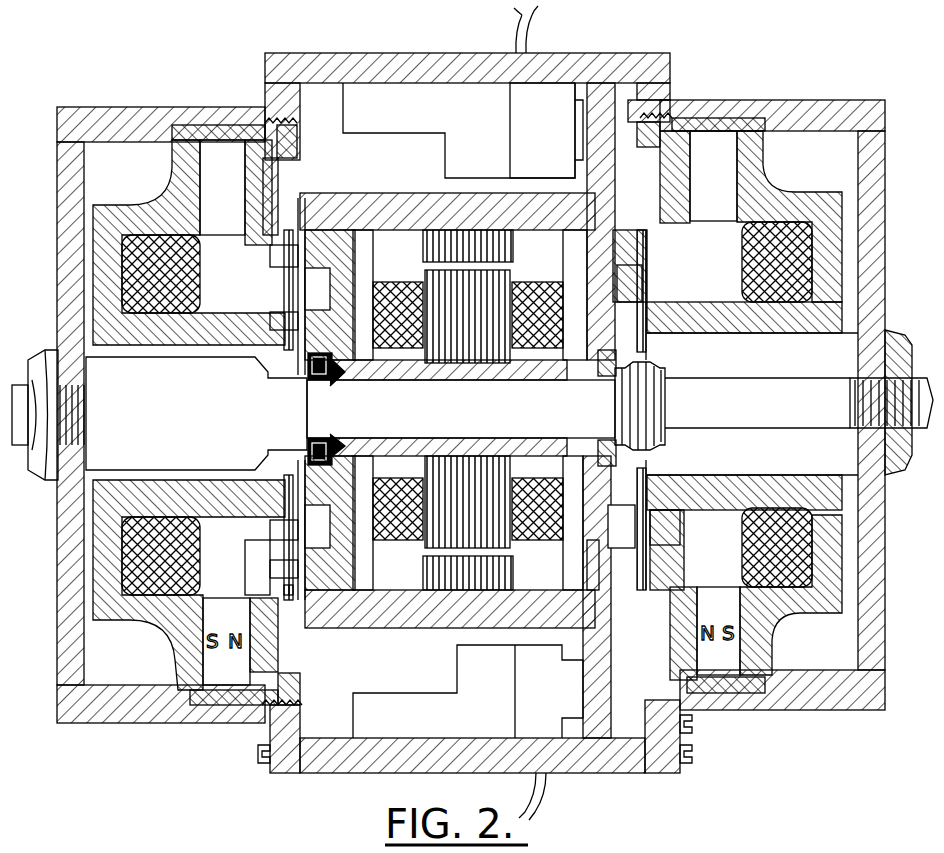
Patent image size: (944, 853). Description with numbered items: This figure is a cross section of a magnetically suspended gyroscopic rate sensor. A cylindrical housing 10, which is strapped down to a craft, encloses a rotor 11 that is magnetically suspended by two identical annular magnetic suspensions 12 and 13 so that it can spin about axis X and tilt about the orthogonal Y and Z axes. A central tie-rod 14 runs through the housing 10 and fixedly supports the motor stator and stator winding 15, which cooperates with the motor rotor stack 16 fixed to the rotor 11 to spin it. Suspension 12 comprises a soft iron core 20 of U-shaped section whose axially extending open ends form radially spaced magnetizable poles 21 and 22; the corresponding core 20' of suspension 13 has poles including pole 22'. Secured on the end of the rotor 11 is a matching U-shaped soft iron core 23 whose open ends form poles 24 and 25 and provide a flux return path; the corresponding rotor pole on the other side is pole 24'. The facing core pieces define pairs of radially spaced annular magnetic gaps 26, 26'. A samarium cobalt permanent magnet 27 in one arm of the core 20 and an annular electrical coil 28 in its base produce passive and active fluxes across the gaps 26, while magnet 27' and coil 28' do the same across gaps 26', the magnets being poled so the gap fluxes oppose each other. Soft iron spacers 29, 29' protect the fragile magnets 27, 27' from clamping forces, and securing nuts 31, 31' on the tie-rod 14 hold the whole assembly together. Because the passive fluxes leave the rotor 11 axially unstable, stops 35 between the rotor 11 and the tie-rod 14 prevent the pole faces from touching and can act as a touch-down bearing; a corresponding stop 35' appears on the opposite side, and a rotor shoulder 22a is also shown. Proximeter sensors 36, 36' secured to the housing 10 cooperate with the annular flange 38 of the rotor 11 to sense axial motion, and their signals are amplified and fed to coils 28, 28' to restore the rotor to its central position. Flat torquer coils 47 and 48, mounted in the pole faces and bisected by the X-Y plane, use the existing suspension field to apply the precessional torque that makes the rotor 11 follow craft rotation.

The cylindrical housing 10 is at (85, 107).
The rotor 11 is at (400, 628).
The magnetic suspension 12 is at (282, 288).
The magnetic suspension 13 is at (650, 285).
The tie-rod 14 is at (470, 412).
The stator and stator winding 15 is at (495, 362).
The motor rotor stack 16 is at (447, 193).
The soft iron core 20 is at (136, 432).
The soft iron core 20' is at (772, 405).
The magnetizable pole 21 is at (292, 232).
The magnetizable pole 22 is at (196, 407).
The magnetizable pole 22' is at (735, 410).
The shaft shoulder 22a is at (583, 535).
The soft iron core 23 is at (318, 283).
The magnetizable pole 24 is at (282, 368).
The magnetizable pole 24' is at (673, 526).
The magnetizable pole 25 is at (332, 378).
The annular magnetic gap 26 is at (299, 620).
The annular magnetic gap 26' is at (672, 410).
The permanent magnet 27 is at (189, 242).
The permanent magnet 27' is at (751, 179).
The electrical coil 28 is at (106, 415).
The electrical coil 28' is at (837, 398).
The soft iron spacer 29 is at (234, 381).
The soft iron spacer 29' is at (718, 379).
The securing nut 31 is at (48, 442).
The securing nut 31' is at (892, 417).
The stop 35 is at (345, 408).
The right threaded collar 35' is at (612, 408).
The proximeter sensor 36 is at (463, 129).
The proximeter sensor 36' is at (468, 691).
The annular flange 38 is at (600, 83).
The torquer coil 47 is at (282, 545).
The torquer coil 48 is at (650, 558).